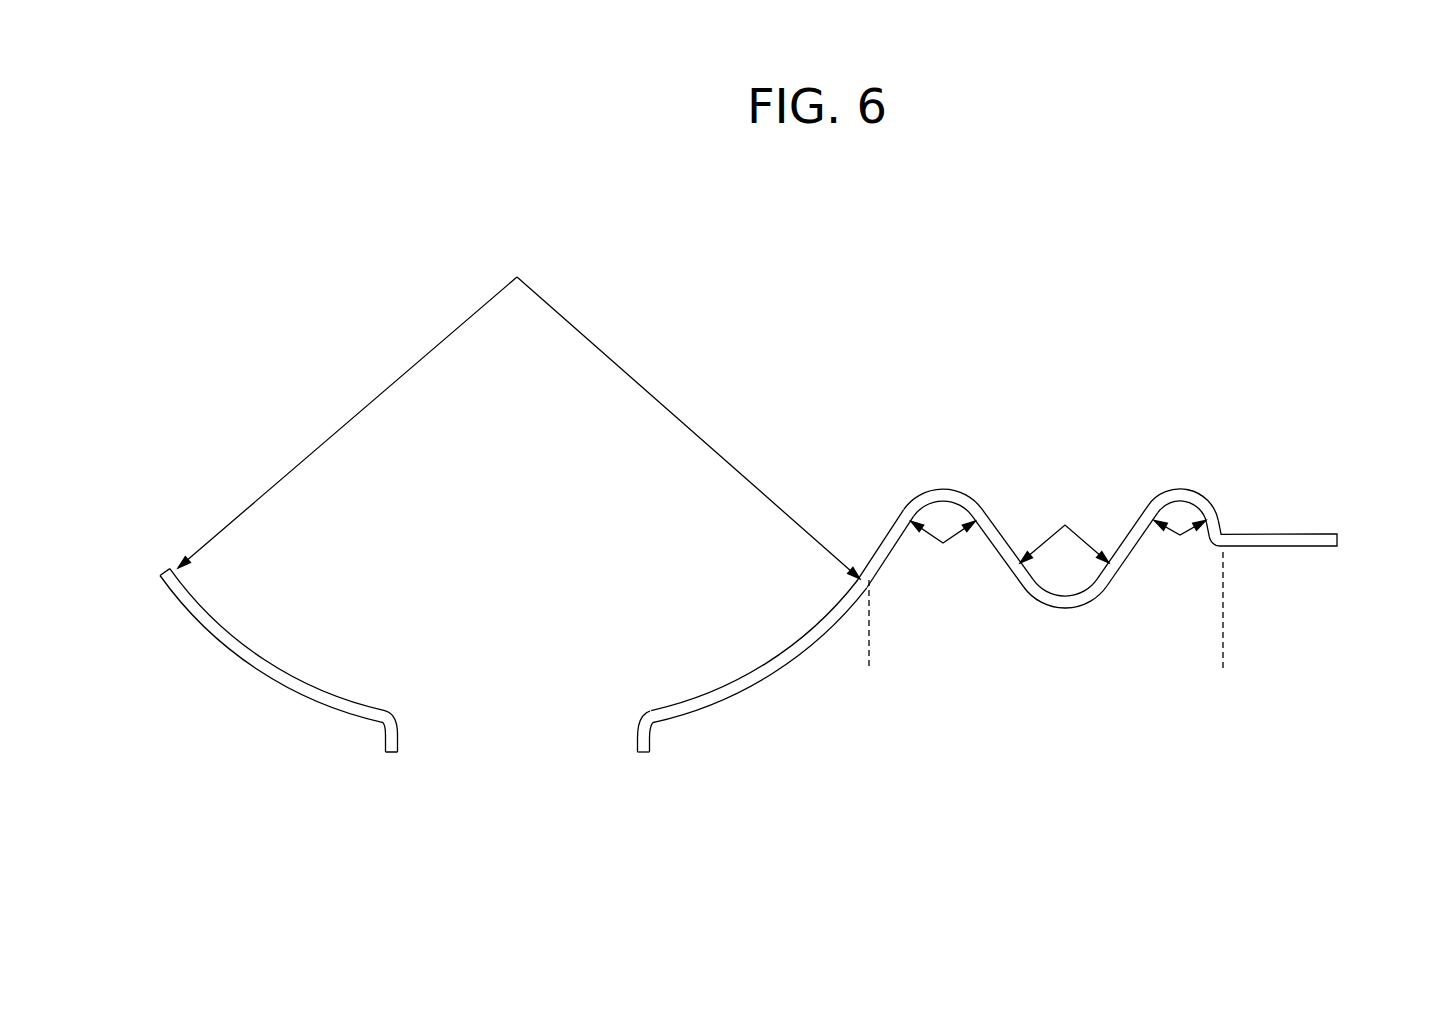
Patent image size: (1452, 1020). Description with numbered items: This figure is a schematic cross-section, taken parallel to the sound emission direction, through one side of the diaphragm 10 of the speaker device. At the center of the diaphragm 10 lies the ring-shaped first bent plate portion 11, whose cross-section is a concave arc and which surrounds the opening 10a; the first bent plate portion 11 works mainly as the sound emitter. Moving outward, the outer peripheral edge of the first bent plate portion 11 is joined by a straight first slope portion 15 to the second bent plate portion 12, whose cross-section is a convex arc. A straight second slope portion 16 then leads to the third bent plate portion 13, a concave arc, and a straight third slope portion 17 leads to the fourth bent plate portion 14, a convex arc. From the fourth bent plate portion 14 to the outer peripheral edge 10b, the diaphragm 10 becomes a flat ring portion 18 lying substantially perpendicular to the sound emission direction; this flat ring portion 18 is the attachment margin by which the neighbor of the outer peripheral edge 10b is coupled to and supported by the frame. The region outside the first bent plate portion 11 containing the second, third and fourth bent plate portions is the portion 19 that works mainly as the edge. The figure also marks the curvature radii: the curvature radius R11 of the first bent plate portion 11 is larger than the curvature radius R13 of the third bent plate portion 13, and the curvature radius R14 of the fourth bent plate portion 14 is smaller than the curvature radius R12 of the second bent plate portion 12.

The diaphragm 10 is at (856, 243).
The opening 10a is at (640, 722).
The outer peripheral edge 10b is at (1339, 540).
The first bent plate portion 11 is at (304, 705).
The second bent plate portion 12 is at (942, 489).
The third bent plate portion 13 is at (1066, 609).
The fourth bent plate portion 14 is at (1177, 489).
The first slope portion 15 is at (887, 537).
The second slope portion 16 is at (997, 528).
The third slope portion 17 is at (1136, 553).
The flat ring portion 18 is at (1226, 551).
The portion working as edge 19 is at (1226, 666).
The curvature radius of the arc of the first bent plate portion R11 is at (363, 407).
The curvature radius of the arc of the second bent plate portion R12 is at (934, 546).
The curvature radius of the arc of the third bent plate portion R13 is at (1088, 538).
The curvature radius of the arc of the fourth bent plate portion R14 is at (1181, 540).